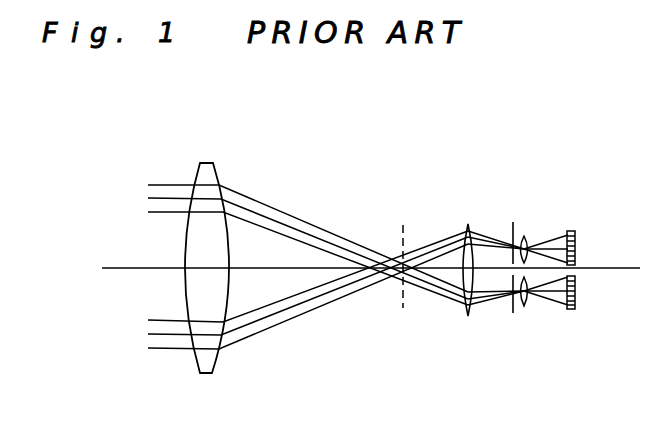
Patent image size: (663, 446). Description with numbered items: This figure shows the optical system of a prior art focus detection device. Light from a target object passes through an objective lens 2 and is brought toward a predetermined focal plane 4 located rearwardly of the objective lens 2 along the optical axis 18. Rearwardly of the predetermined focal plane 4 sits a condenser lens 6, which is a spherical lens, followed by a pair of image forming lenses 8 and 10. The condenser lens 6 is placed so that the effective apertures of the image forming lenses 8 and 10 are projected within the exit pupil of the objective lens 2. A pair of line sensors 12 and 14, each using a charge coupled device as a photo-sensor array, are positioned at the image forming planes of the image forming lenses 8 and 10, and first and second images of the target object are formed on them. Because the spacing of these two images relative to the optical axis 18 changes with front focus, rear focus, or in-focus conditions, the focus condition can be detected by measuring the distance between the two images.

The objective lens 2 is at (201, 374).
The predetermined focal plane 4 is at (403, 307).
The condenser lens 6 is at (468, 316).
The image forming lens 8 is at (525, 236).
The image forming lens 10 is at (524, 306).
The line sensor 12 is at (572, 233).
The line sensor 14 is at (570, 310).
The optical axis 18 is at (120, 268).